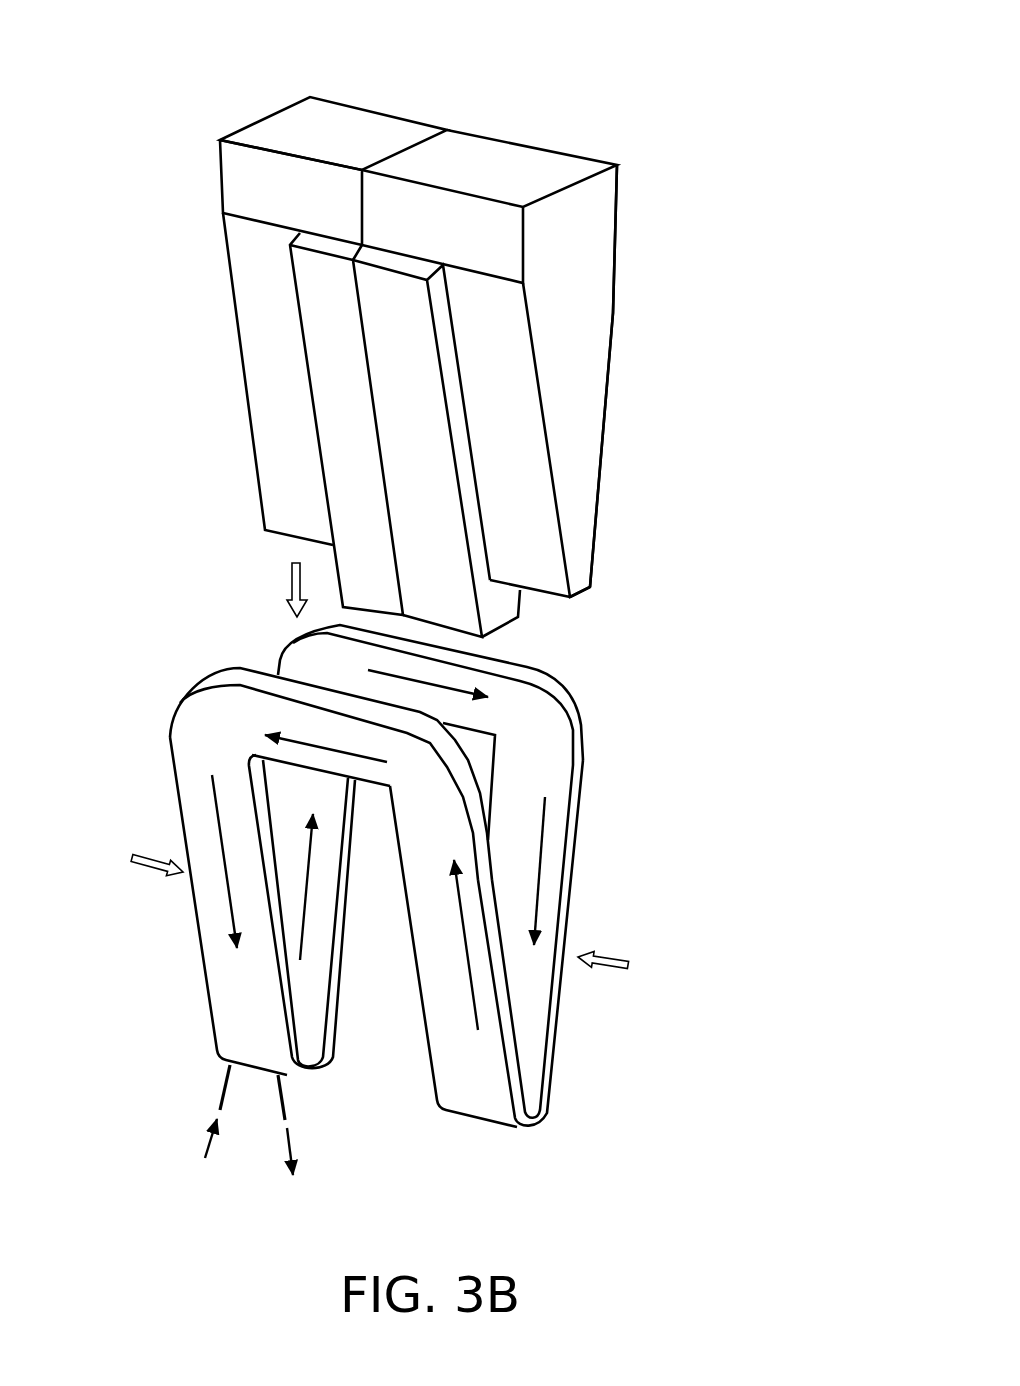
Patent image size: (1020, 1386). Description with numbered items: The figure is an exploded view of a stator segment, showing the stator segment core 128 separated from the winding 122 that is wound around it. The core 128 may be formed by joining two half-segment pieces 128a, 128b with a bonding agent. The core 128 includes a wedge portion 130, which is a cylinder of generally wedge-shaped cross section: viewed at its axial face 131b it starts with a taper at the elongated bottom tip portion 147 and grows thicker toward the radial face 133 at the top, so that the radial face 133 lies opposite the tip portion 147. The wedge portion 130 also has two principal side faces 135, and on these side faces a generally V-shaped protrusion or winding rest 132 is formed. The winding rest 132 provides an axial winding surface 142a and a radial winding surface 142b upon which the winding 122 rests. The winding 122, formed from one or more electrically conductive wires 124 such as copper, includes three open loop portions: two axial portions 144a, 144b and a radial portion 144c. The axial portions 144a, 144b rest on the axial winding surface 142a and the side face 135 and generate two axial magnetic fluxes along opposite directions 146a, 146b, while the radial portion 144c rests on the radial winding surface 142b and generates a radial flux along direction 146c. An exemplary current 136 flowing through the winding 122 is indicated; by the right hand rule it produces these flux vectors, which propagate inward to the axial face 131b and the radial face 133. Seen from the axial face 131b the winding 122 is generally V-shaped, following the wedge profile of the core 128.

The winding 122 is at (89, 675).
The electrically conductive wires 124 is at (223, 1085).
The stator segment core 128 is at (142, 125).
The half-segment piece 128a is at (319, 128).
The half-segment piece 128b is at (575, 145).
The wedge portion 130 is at (582, 277).
The axial face 131b is at (585, 370).
The winding rest 132 is at (505, 614).
The radial face 133 is at (337, 128).
The side face 135 is at (273, 352).
The current 136 is at (213, 808).
The axial winding surface 142a is at (466, 455).
The radial winding surface 142b is at (398, 262).
The axial portion 144a is at (343, 1173).
The axial portion 144b is at (578, 1137).
The radial portion 144c is at (623, 668).
The direction 146a is at (147, 873).
The direction 146b is at (605, 975).
The direction 146c is at (282, 582).
The tip portion 147 is at (587, 597).